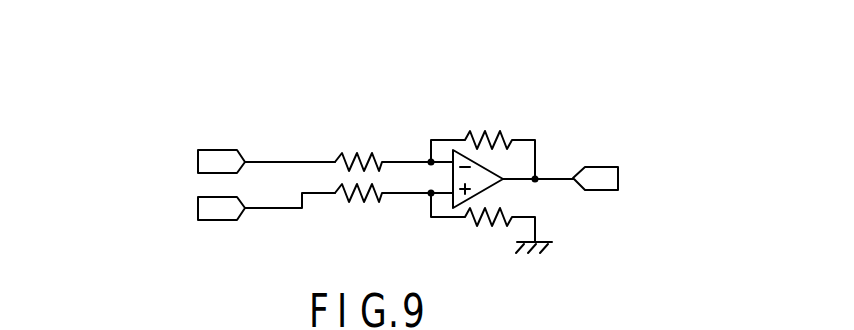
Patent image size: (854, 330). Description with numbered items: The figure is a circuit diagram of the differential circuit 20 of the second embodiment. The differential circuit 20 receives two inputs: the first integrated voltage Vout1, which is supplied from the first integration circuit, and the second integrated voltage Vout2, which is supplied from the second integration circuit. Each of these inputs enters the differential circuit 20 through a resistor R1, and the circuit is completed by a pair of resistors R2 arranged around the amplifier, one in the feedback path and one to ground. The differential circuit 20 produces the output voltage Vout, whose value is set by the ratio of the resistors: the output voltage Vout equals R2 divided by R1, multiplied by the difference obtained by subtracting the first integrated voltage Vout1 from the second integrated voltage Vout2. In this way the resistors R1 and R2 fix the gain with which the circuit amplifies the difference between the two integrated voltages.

The differential circuit 20 is at (548, 112).
The resistor R1 is at (383, 178).
The resistor R2 is at (483, 179).
The first integrated voltage Vout1 is at (187, 162).
The second integrated voltage Vout2 is at (187, 208).
The output voltage Vout is at (627, 178).